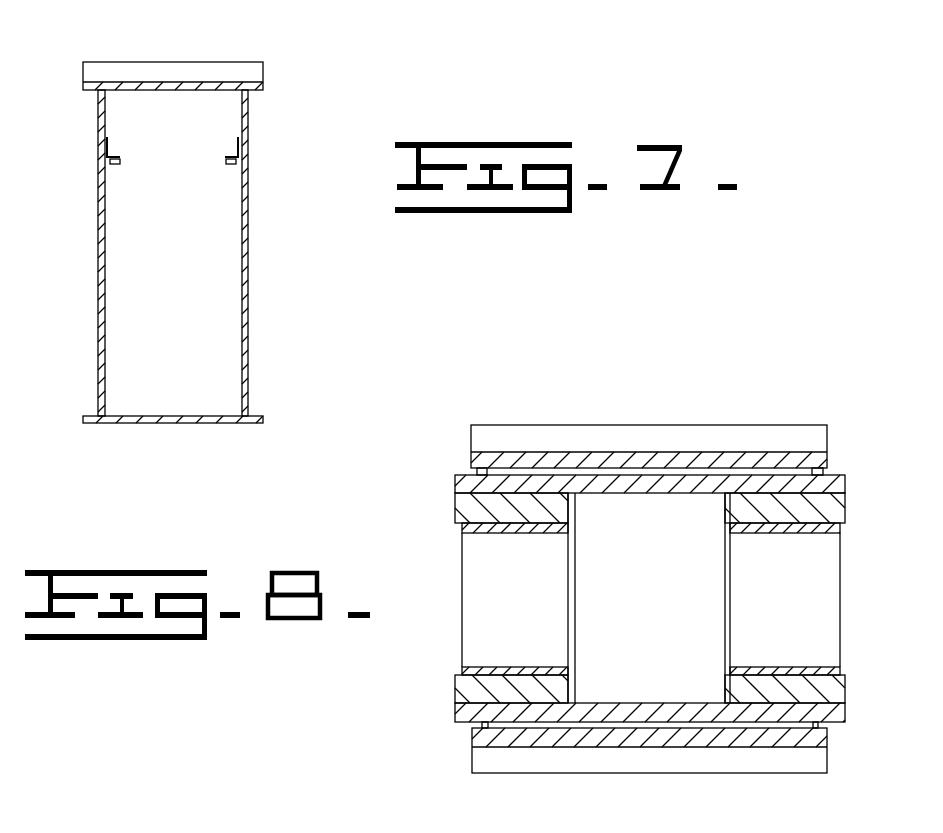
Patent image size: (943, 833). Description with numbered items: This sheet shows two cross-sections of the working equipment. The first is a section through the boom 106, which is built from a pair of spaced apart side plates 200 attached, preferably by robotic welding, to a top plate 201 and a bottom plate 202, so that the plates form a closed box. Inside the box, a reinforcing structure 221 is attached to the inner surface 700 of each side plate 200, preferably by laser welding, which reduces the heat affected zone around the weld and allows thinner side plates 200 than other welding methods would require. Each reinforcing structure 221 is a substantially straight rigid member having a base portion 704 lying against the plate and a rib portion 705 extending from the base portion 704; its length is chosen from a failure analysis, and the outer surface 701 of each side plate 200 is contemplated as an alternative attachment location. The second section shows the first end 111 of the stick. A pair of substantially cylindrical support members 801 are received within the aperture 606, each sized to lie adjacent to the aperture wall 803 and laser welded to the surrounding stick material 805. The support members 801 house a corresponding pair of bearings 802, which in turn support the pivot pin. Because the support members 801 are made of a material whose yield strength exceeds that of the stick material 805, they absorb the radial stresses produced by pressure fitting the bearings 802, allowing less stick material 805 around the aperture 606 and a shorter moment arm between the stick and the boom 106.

In FIG. 7, the boom 106 is at (293, 122).
In FIG. 7, the top plate 201 is at (99, 90).
In FIG. 7, the bottom plate 202 is at (140, 424).
In FIG. 7, the side plates 200 is at (88, 315).
In FIG. 7, the outer surface 701 is at (98, 213).
In FIG. 7, the base portion 704 is at (236, 148).
In FIG. 7, the rib portion 705 is at (225, 162).
In FIG. 7, the reinforcing structure 221 is at (113, 122).
In FIG. 7, the inner surfaces 700 is at (105, 368).
In FIG. 8, the first end 111 is at (675, 400).
In FIG. 8, the stick material 805 is at (463, 482).
In FIG. 8, the support members 801 is at (462, 517).
In FIG. 8, the bearings 802 is at (470, 530).
In FIG. 8, the aperture wall 803 is at (463, 693).
In FIG. 8, the aperture 606 is at (665, 610).